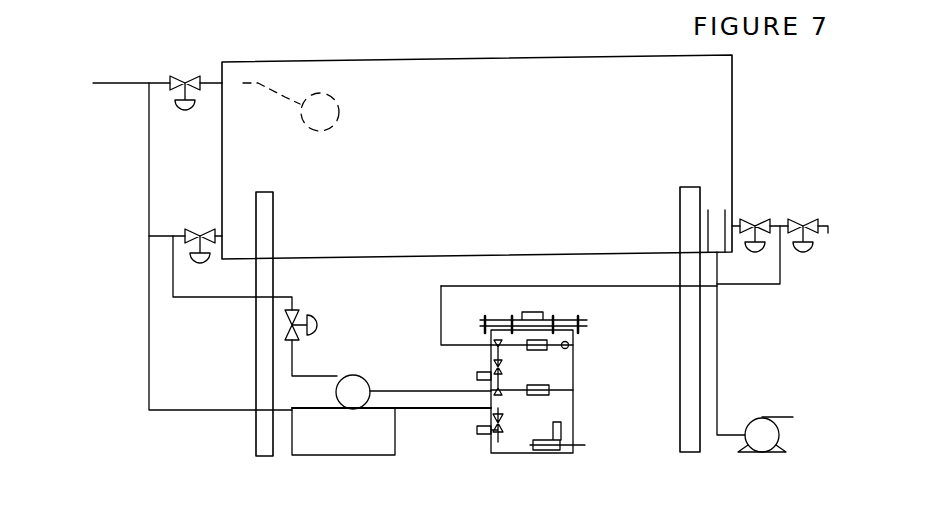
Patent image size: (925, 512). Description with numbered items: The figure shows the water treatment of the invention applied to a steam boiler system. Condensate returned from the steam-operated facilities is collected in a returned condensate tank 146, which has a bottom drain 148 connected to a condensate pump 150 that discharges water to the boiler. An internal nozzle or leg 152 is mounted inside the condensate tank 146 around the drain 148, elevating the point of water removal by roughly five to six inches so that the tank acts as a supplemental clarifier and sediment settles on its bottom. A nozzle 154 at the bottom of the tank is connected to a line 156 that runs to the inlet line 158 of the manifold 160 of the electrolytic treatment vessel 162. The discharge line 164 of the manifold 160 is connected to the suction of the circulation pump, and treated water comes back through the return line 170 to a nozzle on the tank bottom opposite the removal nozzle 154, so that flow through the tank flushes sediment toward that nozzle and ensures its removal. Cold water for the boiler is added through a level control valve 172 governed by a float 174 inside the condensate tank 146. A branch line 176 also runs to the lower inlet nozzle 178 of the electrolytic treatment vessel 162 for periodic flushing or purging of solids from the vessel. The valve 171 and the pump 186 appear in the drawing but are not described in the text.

The returned condensate tank 146 is at (685, 110).
The bottom drain 148 is at (720, 309).
The condensate pump 150 is at (759, 425).
The internal nozzle or leg 152 is at (717, 232).
The nozzle 154 is at (748, 222).
The line 156 is at (575, 287).
The inlet line 158 is at (463, 345).
The manifold 160 is at (573, 345).
The electrolytic treatment vessel 162 is at (547, 370).
The discharge line 164 is at (422, 390).
The return line 170 is at (233, 296).
The valve 171 is at (217, 234).
The level control valve 172 is at (190, 112).
The float 174 is at (345, 118).
The branch line 176 is at (152, 200).
The lower inlet nozzle 178 is at (478, 430).
The pump 186 is at (352, 390).